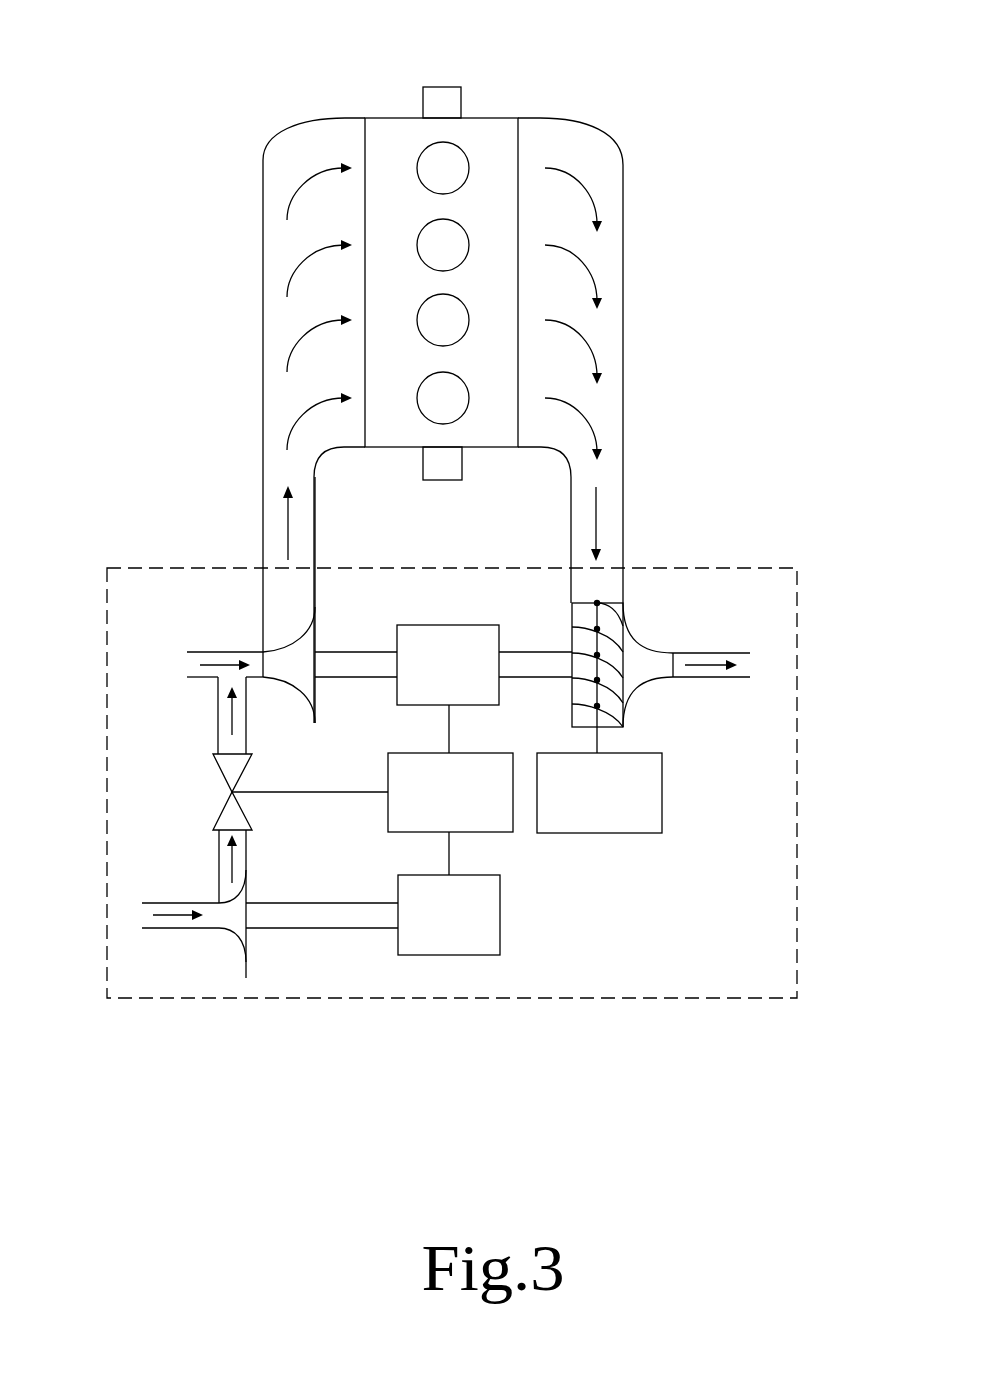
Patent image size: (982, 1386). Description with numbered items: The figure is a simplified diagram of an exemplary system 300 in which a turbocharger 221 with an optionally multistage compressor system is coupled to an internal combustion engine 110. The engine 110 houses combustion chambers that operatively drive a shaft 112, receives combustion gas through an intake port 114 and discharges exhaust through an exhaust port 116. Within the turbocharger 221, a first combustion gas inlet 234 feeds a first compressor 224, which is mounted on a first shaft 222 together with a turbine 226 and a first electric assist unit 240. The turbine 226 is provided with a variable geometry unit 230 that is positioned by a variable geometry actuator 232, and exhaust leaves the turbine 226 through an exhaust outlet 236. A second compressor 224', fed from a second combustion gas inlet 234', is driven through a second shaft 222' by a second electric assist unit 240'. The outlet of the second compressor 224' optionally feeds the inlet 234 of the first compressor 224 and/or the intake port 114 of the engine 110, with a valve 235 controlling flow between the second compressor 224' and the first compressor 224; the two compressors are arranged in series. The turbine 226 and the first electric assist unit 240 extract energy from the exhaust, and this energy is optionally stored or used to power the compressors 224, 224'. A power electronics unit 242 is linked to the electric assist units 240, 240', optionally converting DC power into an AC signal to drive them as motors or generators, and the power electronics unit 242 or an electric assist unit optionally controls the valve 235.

The system 300 is at (621, 39).
The internal combustion engine 110 is at (403, 118).
The shaft 112 is at (442, 87).
The intake port 114 is at (280, 138).
The exhaust port 116 is at (610, 133).
The turbocharger 221 is at (682, 566).
The first shaft 222 is at (443, 696).
The first compressor 224 is at (330, 600).
The turbine 226 is at (628, 625).
The variable geometry unit 230 is at (570, 628).
The variable geometry actuator 232 is at (599, 780).
The first combustion gas inlet 234 is at (202, 682).
The valve 235 is at (230, 795).
The exhaust outlet 236 is at (703, 653).
The first electric assist unit 240 is at (448, 689).
The power electronics unit 242 is at (372, 814).
The second combustion gas inlet 234' is at (176, 879).
The second shaft 222' is at (322, 888).
The second compressor 224' is at (275, 904).
The second electric assist unit 240' is at (449, 915).